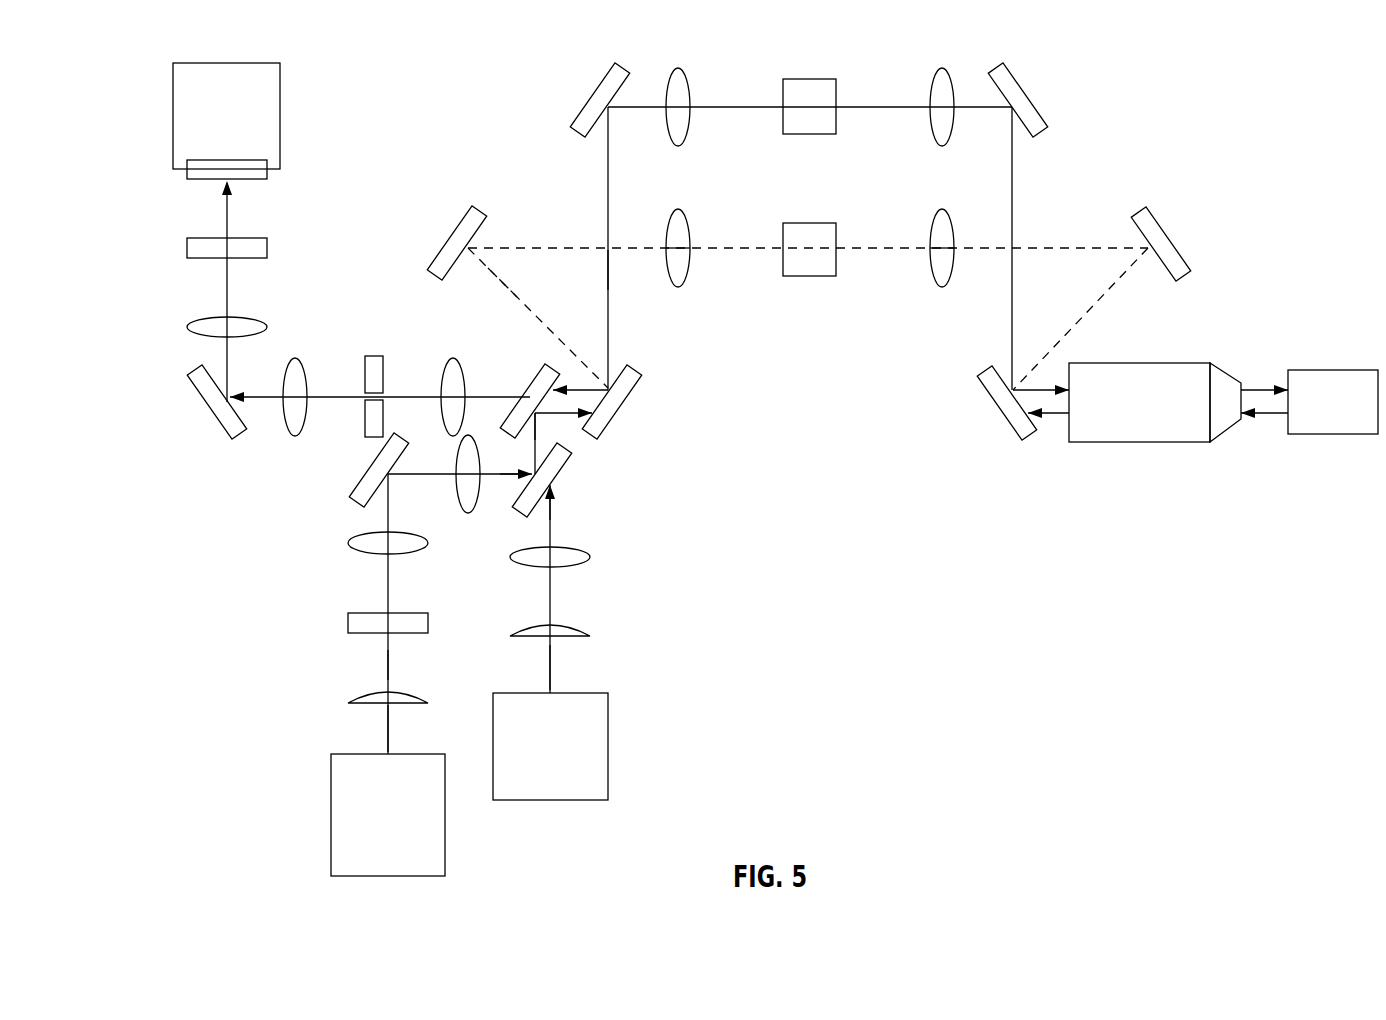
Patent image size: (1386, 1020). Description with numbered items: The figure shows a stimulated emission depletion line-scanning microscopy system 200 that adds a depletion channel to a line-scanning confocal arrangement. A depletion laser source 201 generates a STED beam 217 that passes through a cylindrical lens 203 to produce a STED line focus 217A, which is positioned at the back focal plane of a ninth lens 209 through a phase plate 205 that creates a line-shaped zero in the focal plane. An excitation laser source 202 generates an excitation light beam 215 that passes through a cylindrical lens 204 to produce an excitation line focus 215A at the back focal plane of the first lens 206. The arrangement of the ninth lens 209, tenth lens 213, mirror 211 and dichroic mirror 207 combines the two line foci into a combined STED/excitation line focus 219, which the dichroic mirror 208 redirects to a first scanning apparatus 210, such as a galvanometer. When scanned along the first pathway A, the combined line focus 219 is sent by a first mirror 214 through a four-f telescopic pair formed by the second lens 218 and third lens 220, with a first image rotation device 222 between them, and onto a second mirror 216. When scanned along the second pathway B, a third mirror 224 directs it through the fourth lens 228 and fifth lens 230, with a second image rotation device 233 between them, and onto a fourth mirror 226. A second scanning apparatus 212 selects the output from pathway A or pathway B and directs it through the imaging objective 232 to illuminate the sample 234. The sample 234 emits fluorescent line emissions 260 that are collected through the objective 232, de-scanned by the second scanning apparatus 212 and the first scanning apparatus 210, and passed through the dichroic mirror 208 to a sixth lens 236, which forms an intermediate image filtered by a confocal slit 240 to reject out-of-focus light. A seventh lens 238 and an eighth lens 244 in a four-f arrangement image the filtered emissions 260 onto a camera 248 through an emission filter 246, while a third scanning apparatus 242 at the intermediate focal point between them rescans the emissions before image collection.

The stimulated emission depletion line-scanning microscopy system 200 is at (370, 70).
The depletion laser source 201 is at (331, 815).
The excitation laser source 202 is at (608, 747).
The cylindrical lens 203 is at (350, 700).
The cylindrical lens 204 is at (590, 633).
The phase plate 205 is at (348, 623).
The first lens 206 is at (590, 557).
The dichroic mirror 207 is at (555, 482).
The dichroic mirror 208 is at (527, 388).
The ninth lens 209 is at (350, 545).
The first scanning apparatus 210 is at (630, 397).
The mirror 211 is at (368, 505).
The second scanning apparatus 212 is at (993, 415).
The tenth lens 213 is at (467, 514).
The first mirror 214 is at (480, 205).
The excitation light beam 215 is at (548, 663).
The excitation line focus 215A is at (552, 507).
The second mirror 216 is at (1167, 240).
The STED beam 217 is at (390, 715).
The STED line focus 217A is at (515, 477).
The second lens 218 is at (678, 287).
The combined STED/excitation line focus 219 is at (540, 420).
The third lens 220 is at (942, 288).
The first image rotation device 222 is at (805, 277).
The third mirror 224 is at (590, 95).
The fourth mirror 226 is at (1028, 93).
The fourth lens 228 is at (678, 143).
The fifth lens 230 is at (942, 145).
The imaging objective 232 is at (1150, 443).
The second image rotation device 233 is at (782, 120).
The sample 234 is at (1338, 435).
The sixth lens 236 is at (452, 358).
The seventh lens 238 is at (295, 436).
The confocal slit 240 is at (375, 355).
The third scanning apparatus 242 is at (223, 423).
The eighth lens 244 is at (217, 318).
The emission filter 246 is at (265, 240).
The camera 248 is at (280, 117).
The fluorescent line emissions 260 is at (225, 368).
The first pathway A is at (503, 284).
The second pathway B is at (608, 270).